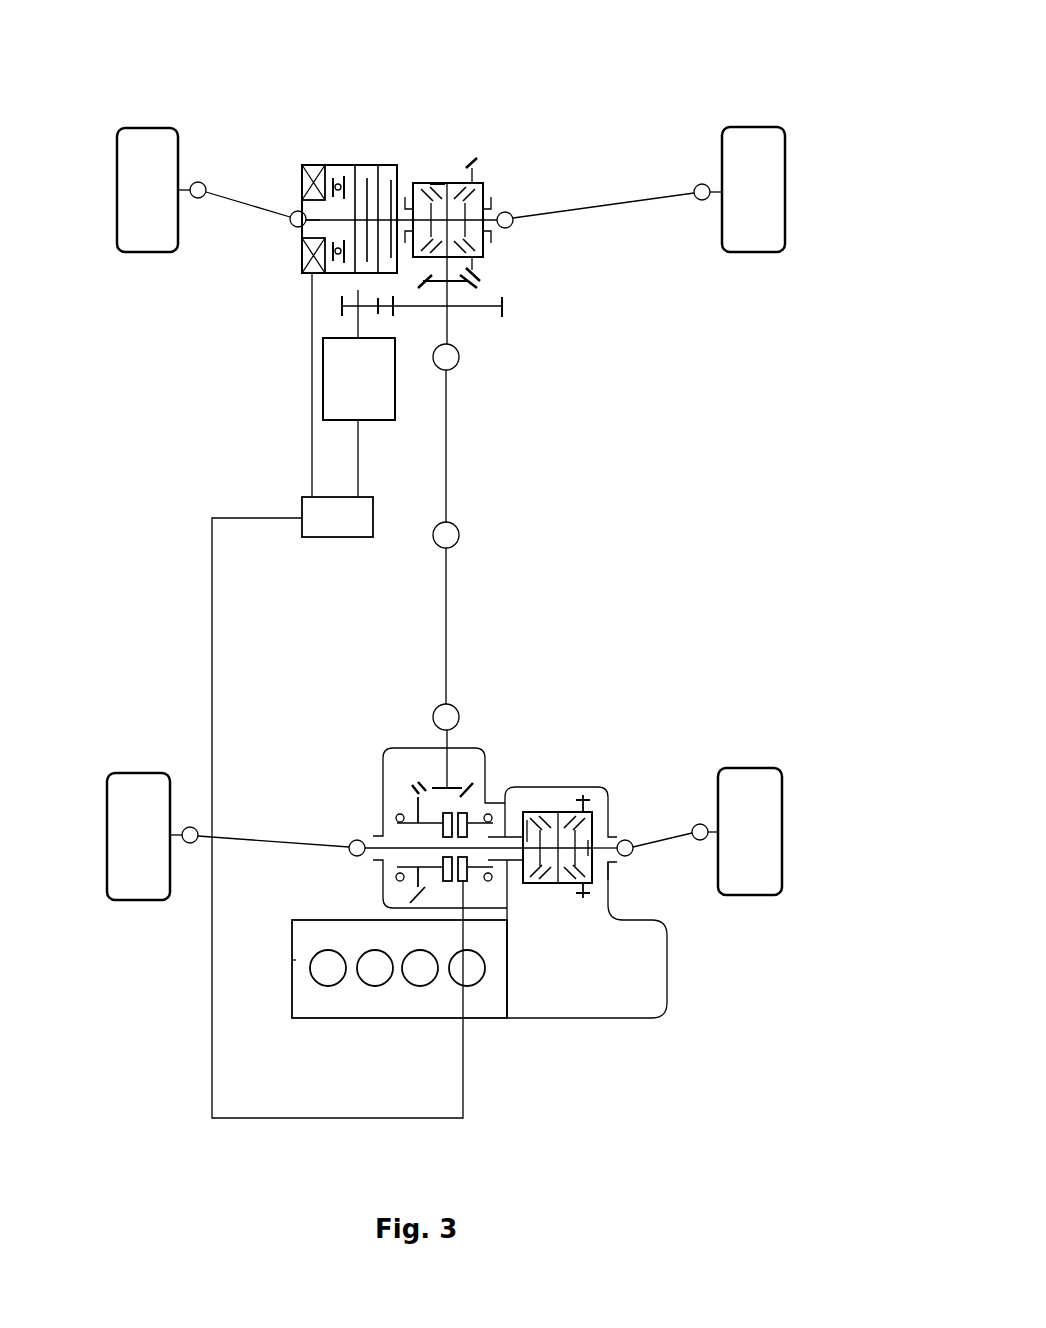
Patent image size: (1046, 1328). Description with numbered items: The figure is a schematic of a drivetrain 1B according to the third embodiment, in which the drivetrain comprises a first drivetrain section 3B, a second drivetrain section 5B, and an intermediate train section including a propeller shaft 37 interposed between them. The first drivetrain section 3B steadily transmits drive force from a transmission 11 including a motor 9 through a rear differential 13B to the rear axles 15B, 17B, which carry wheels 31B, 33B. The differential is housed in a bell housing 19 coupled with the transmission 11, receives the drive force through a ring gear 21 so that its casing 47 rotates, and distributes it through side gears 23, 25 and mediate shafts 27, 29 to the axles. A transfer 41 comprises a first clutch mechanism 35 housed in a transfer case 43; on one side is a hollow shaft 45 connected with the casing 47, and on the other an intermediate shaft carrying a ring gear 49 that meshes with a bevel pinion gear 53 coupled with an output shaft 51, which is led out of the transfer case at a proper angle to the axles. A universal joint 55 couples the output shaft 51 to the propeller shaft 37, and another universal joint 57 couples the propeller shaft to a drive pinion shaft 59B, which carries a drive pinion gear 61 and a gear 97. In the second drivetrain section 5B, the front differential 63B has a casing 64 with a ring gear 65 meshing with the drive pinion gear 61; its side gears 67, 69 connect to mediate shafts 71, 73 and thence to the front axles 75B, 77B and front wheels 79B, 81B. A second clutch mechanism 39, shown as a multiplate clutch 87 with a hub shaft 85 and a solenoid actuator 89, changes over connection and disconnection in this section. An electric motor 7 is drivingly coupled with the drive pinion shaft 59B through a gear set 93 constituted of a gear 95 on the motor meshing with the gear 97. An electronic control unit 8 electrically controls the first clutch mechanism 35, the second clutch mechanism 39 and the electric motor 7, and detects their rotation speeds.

The drivetrain 1B is at (614, 118).
The first drivetrain section 3B is at (277, 962).
The second drivetrain section 5B is at (469, 413).
The electric motor 7 is at (384, 427).
The electronic control unit (ECU) 8 is at (340, 537).
The motor 9 is at (373, 1024).
The transmission 11 is at (585, 1024).
The rear differential 13B is at (558, 811).
The rear axle 15B is at (673, 840).
The rear axle 17B is at (263, 844).
The bell housing 19 is at (609, 790).
The ring gear 21 is at (583, 796).
The side gear 23 is at (593, 836).
The side gear 25 is at (527, 815).
The mediate shaft 27 is at (613, 862).
The mediate shaft 29 is at (518, 864).
The wheel 31B is at (137, 773).
The rear wheel 33B is at (748, 768).
The first clutch mechanism 35 is at (453, 893).
The propeller shaft 37 is at (449, 580).
The second clutch mechanism 39 is at (358, 166).
The transfer 41 is at (378, 787).
The transfer case 43 is at (382, 756).
The hollow shaft 45 is at (480, 815).
The casing 47 is at (569, 890).
The ring gear 49 is at (396, 816).
The output shaft 51 is at (448, 765).
The pinion gear 53 is at (433, 790).
The universal joint 55 is at (437, 706).
The universal joint 57 is at (460, 361).
The drive pinion shaft 59B is at (448, 327).
The drive pinion gear 61 is at (478, 284).
The front differential 63B is at (452, 183).
The casing 64 is at (484, 173).
The ring gear 65 is at (470, 163).
The side gear 67 is at (496, 212).
The side gear 69 is at (438, 182).
The mediate shaft 71 is at (497, 230).
The mediate shaft 73 is at (408, 198).
The front axle 75B is at (620, 206).
The front axle 77B is at (247, 209).
The rear left wheel 79B is at (145, 128).
The front wheel 81B is at (755, 127).
The hub shaft 85 is at (300, 214).
The multiplate clutch 87 is at (352, 167).
The actuator 89 is at (303, 170).
The gear set 93 is at (330, 323).
The gear 95 is at (336, 305).
The gear 97 is at (505, 312).